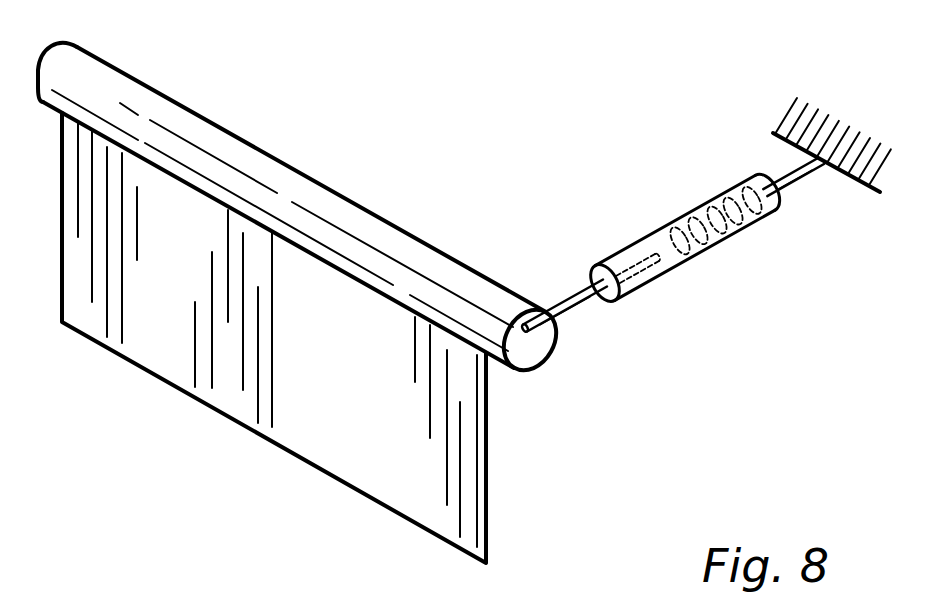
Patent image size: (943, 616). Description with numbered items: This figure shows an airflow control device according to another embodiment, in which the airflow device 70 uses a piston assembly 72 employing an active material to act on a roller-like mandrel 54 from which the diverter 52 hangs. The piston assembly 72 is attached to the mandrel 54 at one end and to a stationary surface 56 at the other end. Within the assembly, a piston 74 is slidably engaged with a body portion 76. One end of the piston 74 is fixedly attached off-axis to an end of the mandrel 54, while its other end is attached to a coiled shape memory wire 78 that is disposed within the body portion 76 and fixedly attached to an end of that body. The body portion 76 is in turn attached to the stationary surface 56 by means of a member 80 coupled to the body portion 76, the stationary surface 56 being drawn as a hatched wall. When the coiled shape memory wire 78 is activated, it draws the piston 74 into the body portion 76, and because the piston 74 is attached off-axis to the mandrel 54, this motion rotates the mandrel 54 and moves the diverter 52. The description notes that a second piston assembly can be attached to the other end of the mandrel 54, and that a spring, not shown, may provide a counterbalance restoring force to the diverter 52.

The diverter 52 is at (487, 518).
The mandrel 54 is at (378, 230).
The stationary surface 56 is at (852, 188).
The airflow device 70 is at (545, 114).
The piston assembly 72 is at (622, 216).
The piston 74 is at (577, 307).
The body portion 76 is at (675, 268).
The coiled shape memory wire 78 is at (678, 233).
The member 80 is at (797, 183).